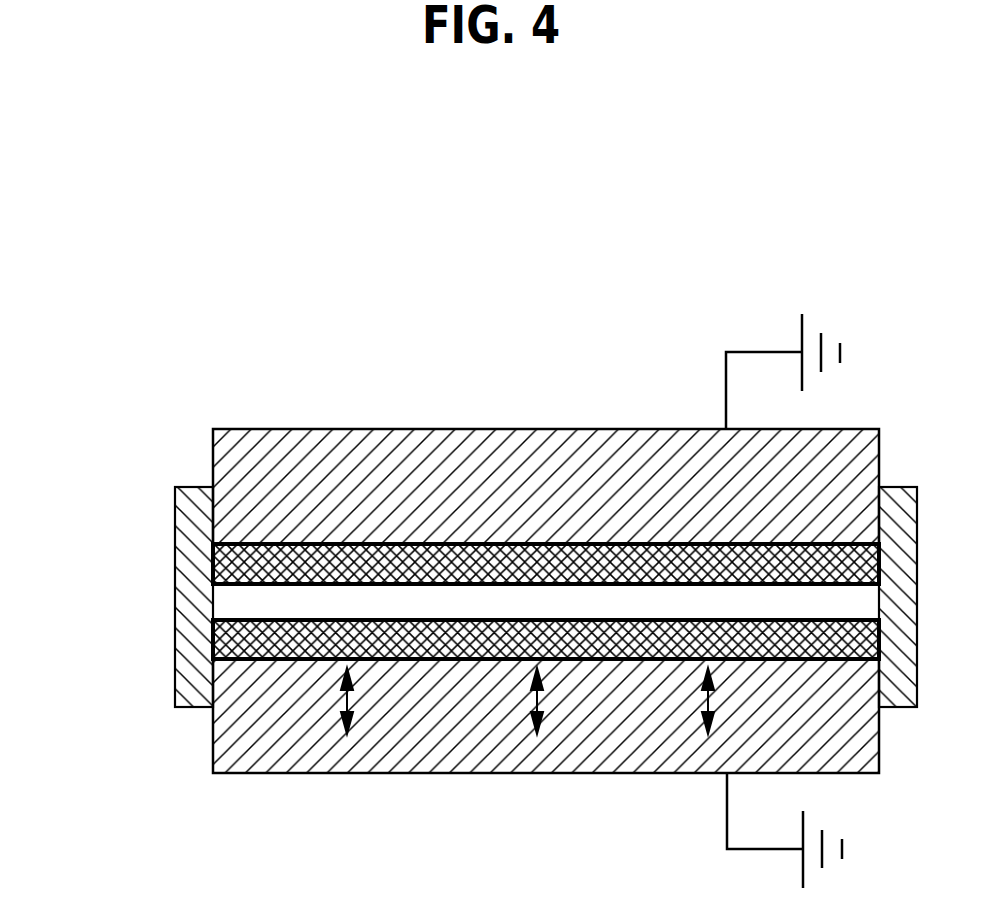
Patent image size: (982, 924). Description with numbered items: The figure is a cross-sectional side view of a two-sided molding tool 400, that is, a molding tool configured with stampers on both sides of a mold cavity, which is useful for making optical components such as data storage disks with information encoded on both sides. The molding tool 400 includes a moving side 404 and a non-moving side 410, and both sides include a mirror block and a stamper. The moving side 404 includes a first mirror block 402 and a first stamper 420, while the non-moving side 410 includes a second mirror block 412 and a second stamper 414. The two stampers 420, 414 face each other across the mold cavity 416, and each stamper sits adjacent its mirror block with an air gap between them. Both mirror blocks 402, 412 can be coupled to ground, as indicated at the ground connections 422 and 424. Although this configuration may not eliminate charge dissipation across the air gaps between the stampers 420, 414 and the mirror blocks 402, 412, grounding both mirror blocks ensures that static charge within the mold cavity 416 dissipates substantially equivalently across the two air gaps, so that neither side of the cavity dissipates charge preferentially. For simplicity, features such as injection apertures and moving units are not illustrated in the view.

The molding tool 400 is at (578, 260).
The first mirror block 402 is at (282, 743).
The moving side 404 is at (157, 622).
The non-moving side 410 is at (157, 429).
The second mirror block 412 is at (478, 488).
The second stamper 414 is at (390, 558).
The mold cavity 416 is at (593, 600).
The first stamper 420 is at (390, 635).
The ground connection of first mirror block 422 is at (727, 822).
The ground connection of second mirror block 424 is at (726, 378).